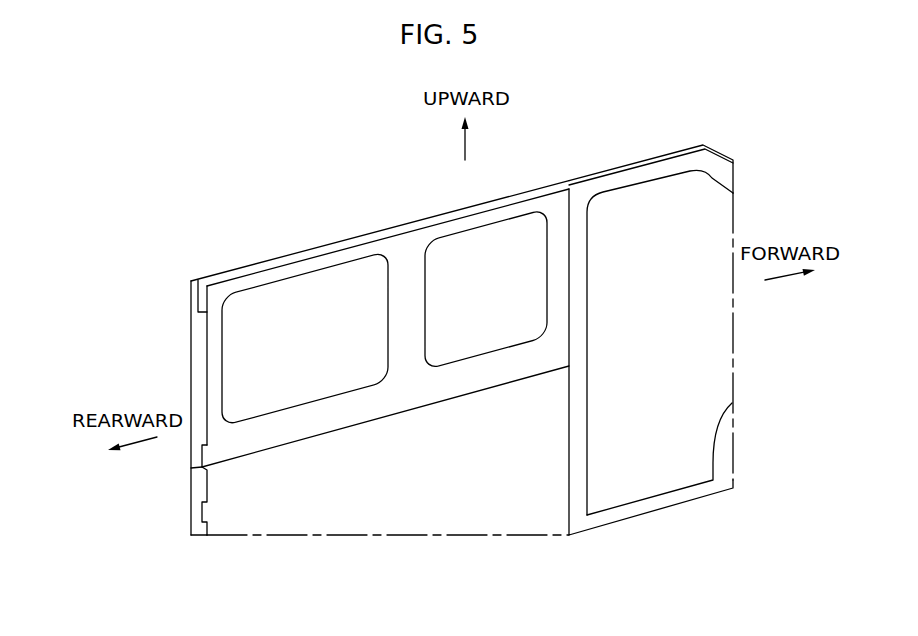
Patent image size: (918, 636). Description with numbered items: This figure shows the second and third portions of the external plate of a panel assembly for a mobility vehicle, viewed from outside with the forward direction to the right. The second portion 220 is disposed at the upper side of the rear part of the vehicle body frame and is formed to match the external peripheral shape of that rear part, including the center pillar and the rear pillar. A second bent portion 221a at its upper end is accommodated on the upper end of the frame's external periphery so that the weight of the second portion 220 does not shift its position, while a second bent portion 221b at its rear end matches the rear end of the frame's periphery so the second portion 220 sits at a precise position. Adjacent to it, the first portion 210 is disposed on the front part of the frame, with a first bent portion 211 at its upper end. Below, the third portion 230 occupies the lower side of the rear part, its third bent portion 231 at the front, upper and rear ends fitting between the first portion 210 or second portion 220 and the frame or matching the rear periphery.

The first portion 210 is at (678, 167).
The first bent portion 211 is at (618, 165).
The second portion 220 is at (407, 290).
The second bent portion 221a is at (278, 262).
The second bent portion 221b is at (195, 358).
The third portion 230 is at (442, 483).
The third bent portion 231 is at (195, 495).